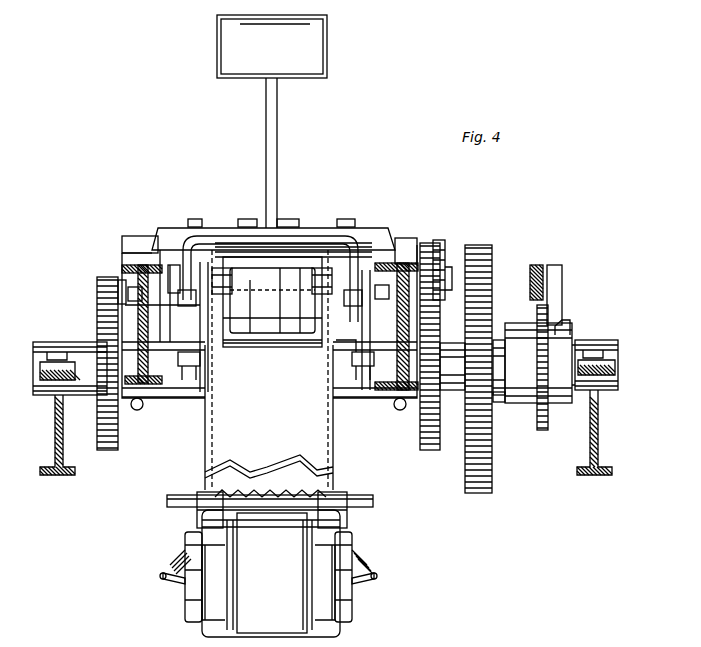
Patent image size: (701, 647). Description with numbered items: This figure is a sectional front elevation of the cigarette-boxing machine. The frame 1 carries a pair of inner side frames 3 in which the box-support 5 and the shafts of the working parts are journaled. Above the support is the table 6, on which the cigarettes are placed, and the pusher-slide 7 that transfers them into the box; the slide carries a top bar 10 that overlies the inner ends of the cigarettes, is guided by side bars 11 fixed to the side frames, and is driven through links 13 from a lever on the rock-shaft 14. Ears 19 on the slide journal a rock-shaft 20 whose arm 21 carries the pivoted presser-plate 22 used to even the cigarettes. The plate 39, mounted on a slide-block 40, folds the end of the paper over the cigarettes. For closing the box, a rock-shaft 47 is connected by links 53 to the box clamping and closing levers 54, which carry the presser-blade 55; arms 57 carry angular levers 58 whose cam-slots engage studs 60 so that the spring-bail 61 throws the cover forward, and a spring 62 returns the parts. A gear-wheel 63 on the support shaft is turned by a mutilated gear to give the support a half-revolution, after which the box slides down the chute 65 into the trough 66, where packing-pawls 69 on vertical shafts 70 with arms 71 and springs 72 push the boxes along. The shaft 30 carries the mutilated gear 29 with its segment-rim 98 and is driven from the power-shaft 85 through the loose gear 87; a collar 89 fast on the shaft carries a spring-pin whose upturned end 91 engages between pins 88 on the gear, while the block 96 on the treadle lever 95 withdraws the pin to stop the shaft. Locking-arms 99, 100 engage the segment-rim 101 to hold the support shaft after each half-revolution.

The frame 1 is at (55, 410).
The inner side frames 3 is at (130, 266).
The box-support 5 is at (214, 270).
The table 6 is at (252, 262).
The pusher-slide 7 is at (267, 246).
The top bar 10 is at (188, 228).
The side bars 11 is at (125, 240).
The links 13 is at (250, 219).
The rock-shaft 14 is at (170, 270).
The ears 19 is at (196, 219).
The rock-shaft 20 is at (334, 212).
The arm 21 is at (277, 165).
The presser-plate 22 is at (272, 46).
The mutilated gear 29 is at (110, 297).
The shaft 30 is at (33, 372).
The plate 39 is at (292, 262).
The slide-block 40 is at (262, 292).
The rock-shaft 47 is at (336, 345).
The links 53 is at (274, 370).
The box clamping and closing levers 54 is at (302, 350).
The presser-blade 55 is at (282, 268).
The arms 57 is at (222, 332).
The angular levers 58 is at (196, 304).
The studs 60 is at (135, 300).
The spring-bail 61 is at (226, 232).
The spring 62 is at (395, 400).
The gear-wheel 63 is at (428, 250).
The chute 65 is at (269, 370).
The trough 66 is at (271, 573).
The packing-pawls 69 is at (185, 538).
The short vertical shafts 70 is at (190, 530).
The arms 71 is at (160, 576).
The springs 72 is at (168, 560).
The power-shaft 85 is at (373, 498).
The loose gear 87 is at (490, 258).
The pins 88 is at (498, 338).
The collar 89 is at (540, 363).
The upturned end 91 is at (568, 323).
The lever 95 is at (529, 282).
The block 96 is at (562, 292).
The segment-rim 98 is at (97, 398).
The locking-arm 99 is at (446, 245).
The locking-arm 100 is at (450, 306).
The segment-rim 101 is at (437, 340).